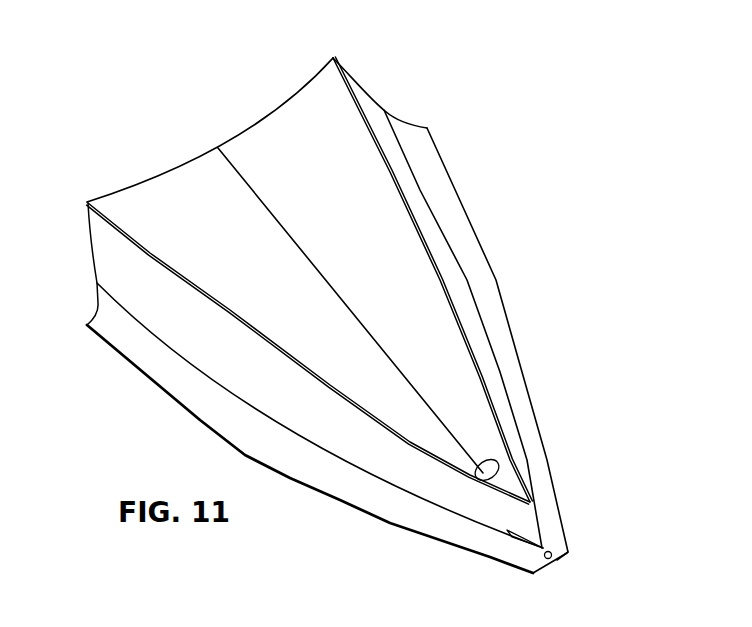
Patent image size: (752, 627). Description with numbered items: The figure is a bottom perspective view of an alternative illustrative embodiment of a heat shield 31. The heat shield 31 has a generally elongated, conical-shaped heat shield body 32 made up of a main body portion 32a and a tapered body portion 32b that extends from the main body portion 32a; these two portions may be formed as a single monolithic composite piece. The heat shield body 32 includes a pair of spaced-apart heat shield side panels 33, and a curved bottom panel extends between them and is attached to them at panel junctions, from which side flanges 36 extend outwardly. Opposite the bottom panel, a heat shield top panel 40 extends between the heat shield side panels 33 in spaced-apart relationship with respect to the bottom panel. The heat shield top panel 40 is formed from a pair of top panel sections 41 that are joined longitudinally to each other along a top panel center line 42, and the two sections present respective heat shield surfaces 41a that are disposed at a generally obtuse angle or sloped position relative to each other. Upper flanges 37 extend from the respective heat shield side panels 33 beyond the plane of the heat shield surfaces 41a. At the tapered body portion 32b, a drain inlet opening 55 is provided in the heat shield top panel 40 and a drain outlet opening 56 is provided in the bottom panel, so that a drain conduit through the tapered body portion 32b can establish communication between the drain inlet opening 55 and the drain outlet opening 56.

The heat shield 31 is at (349, 311).
The heat shield body 32 is at (349, 315).
The main body portion 32a is at (473, 222).
The tapered body portion 32b is at (560, 505).
The heat shield side panels 33 is at (498, 397).
The side flanges 36 is at (480, 267).
The upper flanges 37 is at (547, 447).
The heat shield top panel 40 is at (280, 104).
The top panel sections 41 is at (308, 289).
The heat shield surfaces 41a is at (341, 166).
The top panel center line 42 is at (282, 222).
The drain inlet opening 55 is at (478, 461).
The drain outlet opening 56 is at (557, 560).